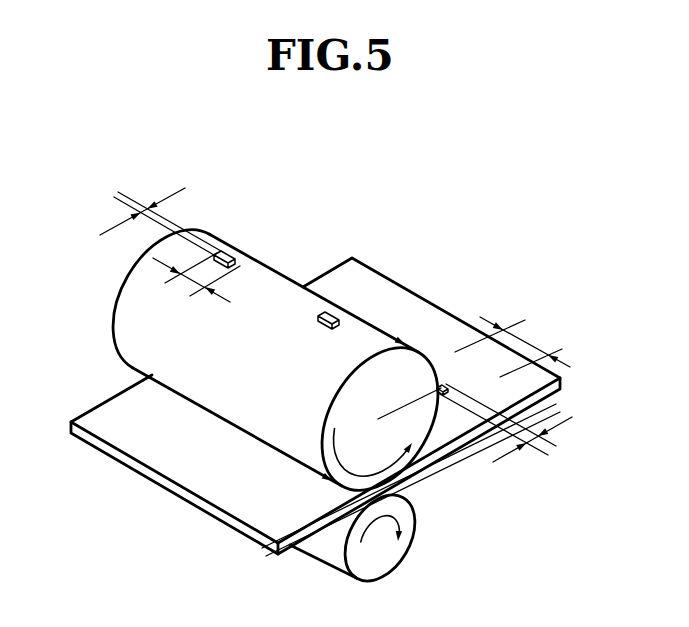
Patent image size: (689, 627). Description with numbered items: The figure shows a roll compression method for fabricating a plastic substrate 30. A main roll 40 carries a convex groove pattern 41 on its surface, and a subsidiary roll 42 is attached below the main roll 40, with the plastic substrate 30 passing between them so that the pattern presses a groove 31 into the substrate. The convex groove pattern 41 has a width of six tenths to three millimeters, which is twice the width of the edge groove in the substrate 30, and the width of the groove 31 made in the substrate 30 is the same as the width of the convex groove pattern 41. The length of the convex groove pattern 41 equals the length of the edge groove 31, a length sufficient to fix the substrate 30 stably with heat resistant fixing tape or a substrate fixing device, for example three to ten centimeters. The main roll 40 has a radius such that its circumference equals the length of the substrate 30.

The plastic substrate 30 is at (550, 374).
The groove 31 is at (442, 382).
The main roll 40 is at (128, 306).
The convex groove pattern 41 is at (220, 256).
The subsidiary roll 42 is at (385, 552).